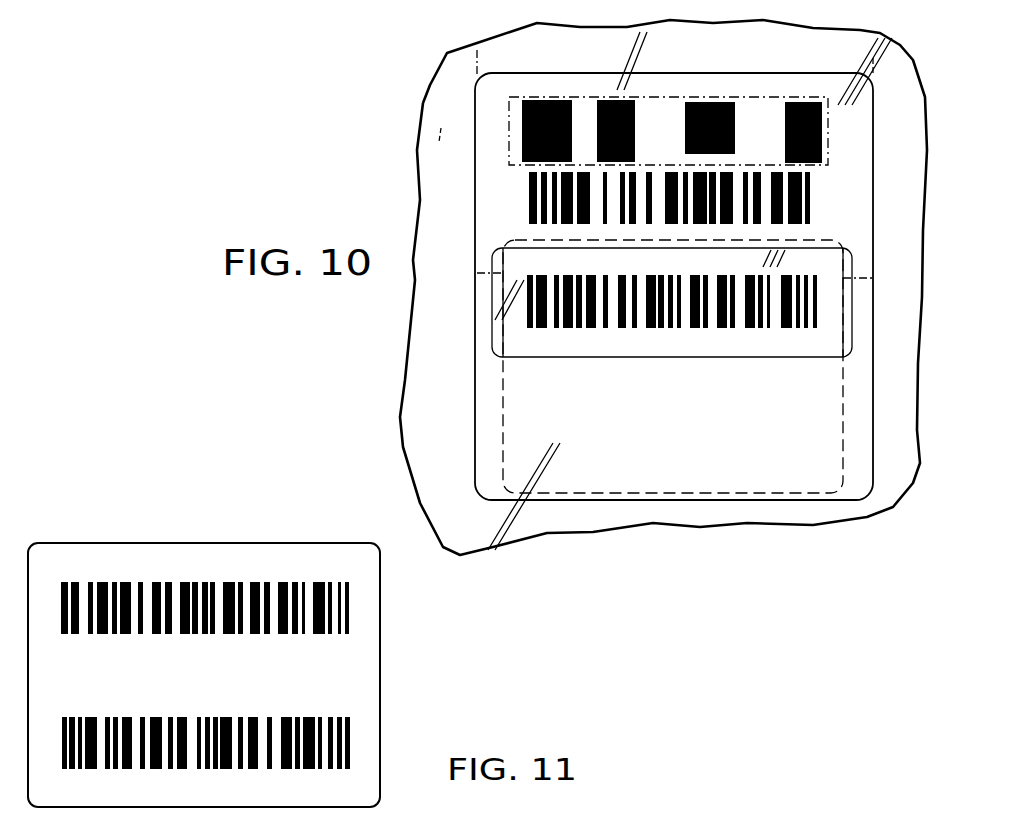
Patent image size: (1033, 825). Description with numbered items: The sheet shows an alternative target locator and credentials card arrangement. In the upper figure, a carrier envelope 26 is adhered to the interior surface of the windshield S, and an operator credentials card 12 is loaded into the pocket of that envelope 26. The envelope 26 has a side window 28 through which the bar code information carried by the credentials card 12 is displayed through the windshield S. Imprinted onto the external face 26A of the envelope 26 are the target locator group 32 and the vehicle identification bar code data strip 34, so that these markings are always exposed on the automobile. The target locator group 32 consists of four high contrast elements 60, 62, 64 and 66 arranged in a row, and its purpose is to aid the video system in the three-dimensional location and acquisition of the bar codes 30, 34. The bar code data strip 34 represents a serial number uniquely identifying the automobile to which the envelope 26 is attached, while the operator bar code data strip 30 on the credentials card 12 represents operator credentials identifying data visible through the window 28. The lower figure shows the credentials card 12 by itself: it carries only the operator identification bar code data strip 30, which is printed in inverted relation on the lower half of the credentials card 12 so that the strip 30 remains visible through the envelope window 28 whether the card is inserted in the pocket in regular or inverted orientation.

In FIG. 10, the windshield S is at (432, 92).
In FIG. 10, the credentials card 12 is at (497, 238).
In FIG. 11, the credentials card 12 is at (142, 538).
In FIG. 10, the envelope 26 is at (465, 468).
In FIG. 10, the external face 26A is at (440, 134).
In FIG. 10, the side window 28 is at (492, 345).
In FIG. 10, the operator bar code data strip 30 is at (512, 305).
In FIG. 11, the operator bar code data strip 30 is at (366, 614).
In FIG. 10, the target locator group 32 is at (505, 125).
In FIG. 10, the bar code data strip 34 is at (822, 181).
In FIG. 10, the high contrast element 60 is at (548, 100).
In FIG. 10, the high contrast element 62 is at (625, 100).
In FIG. 10, the high contrast element 64 is at (735, 125).
In FIG. 10, the high contrast element 66 is at (822, 125).